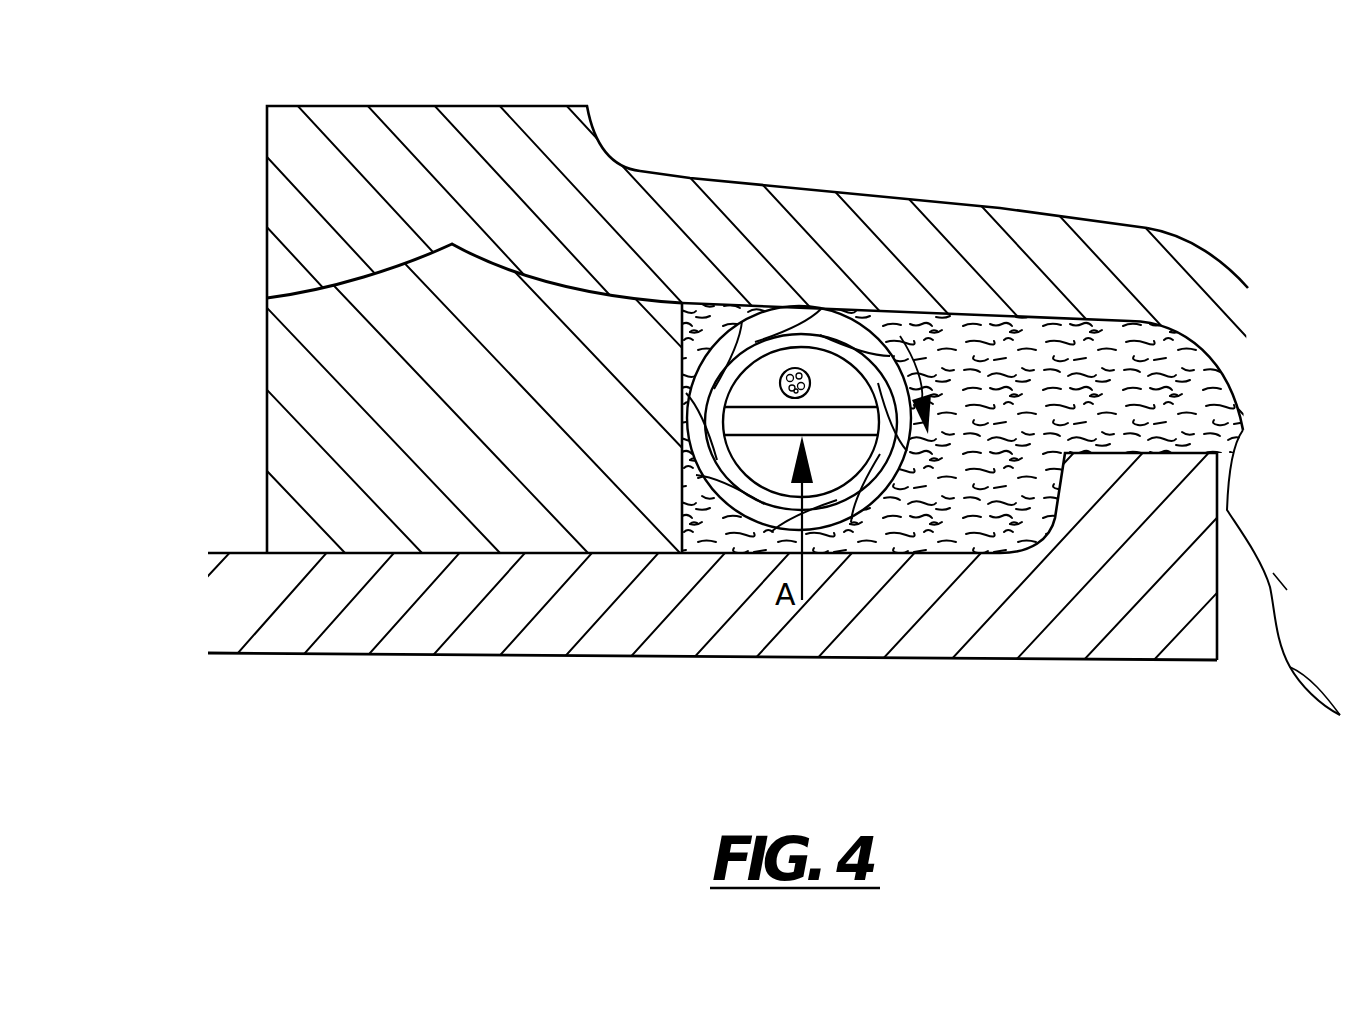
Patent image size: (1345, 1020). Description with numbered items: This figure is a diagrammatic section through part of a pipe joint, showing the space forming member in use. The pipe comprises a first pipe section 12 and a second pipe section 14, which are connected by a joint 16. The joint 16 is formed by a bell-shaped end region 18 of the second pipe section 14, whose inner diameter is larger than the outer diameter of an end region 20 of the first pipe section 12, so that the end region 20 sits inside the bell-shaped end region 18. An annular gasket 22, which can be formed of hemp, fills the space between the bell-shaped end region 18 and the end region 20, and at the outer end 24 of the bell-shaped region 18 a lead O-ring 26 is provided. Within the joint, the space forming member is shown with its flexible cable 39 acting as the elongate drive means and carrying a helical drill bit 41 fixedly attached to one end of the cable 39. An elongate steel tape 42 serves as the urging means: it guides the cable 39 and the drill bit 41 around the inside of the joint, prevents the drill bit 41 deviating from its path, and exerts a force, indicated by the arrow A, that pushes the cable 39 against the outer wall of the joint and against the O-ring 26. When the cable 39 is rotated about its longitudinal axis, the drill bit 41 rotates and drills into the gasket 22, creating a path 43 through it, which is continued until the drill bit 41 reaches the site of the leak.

The first pipe section 12 is at (230, 608).
The second pipe section 14 is at (1087, 202).
The joint 16 is at (466, 96).
The bell-shaped end region 18 is at (905, 213).
The end region 20 is at (580, 620).
The annular gasket 22 is at (1004, 511).
The outer end 24 is at (267, 197).
The lead O-ring 26 is at (283, 367).
The flexible cable 39 is at (781, 380).
The helical drill bit 41 is at (860, 500).
The steel tape 42 is at (737, 422).
The path 43 is at (900, 475).